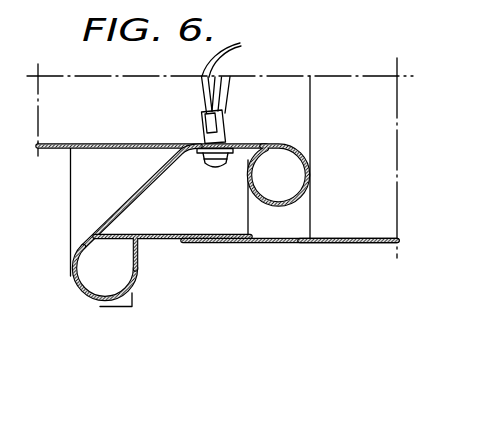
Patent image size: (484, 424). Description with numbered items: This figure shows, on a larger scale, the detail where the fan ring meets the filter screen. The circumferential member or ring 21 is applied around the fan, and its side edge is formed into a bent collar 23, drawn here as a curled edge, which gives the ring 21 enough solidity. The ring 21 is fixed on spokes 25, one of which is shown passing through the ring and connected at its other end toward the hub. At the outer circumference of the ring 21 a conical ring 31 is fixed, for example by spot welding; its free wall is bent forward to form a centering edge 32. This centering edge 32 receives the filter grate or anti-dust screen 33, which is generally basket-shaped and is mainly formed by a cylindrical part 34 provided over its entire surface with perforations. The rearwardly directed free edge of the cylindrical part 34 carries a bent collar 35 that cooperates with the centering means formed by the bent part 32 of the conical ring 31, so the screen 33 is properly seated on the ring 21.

The ring 21 is at (62, 150).
The bent collar 23 is at (312, 177).
The spokes 25 is at (223, 75).
The conical ring 31 is at (103, 221).
The centering edge 32 is at (72, 281).
The filter grate or anti-dust screen 33 is at (327, 242).
The cylindrical part 34 is at (267, 245).
The bent collar 35 is at (138, 277).